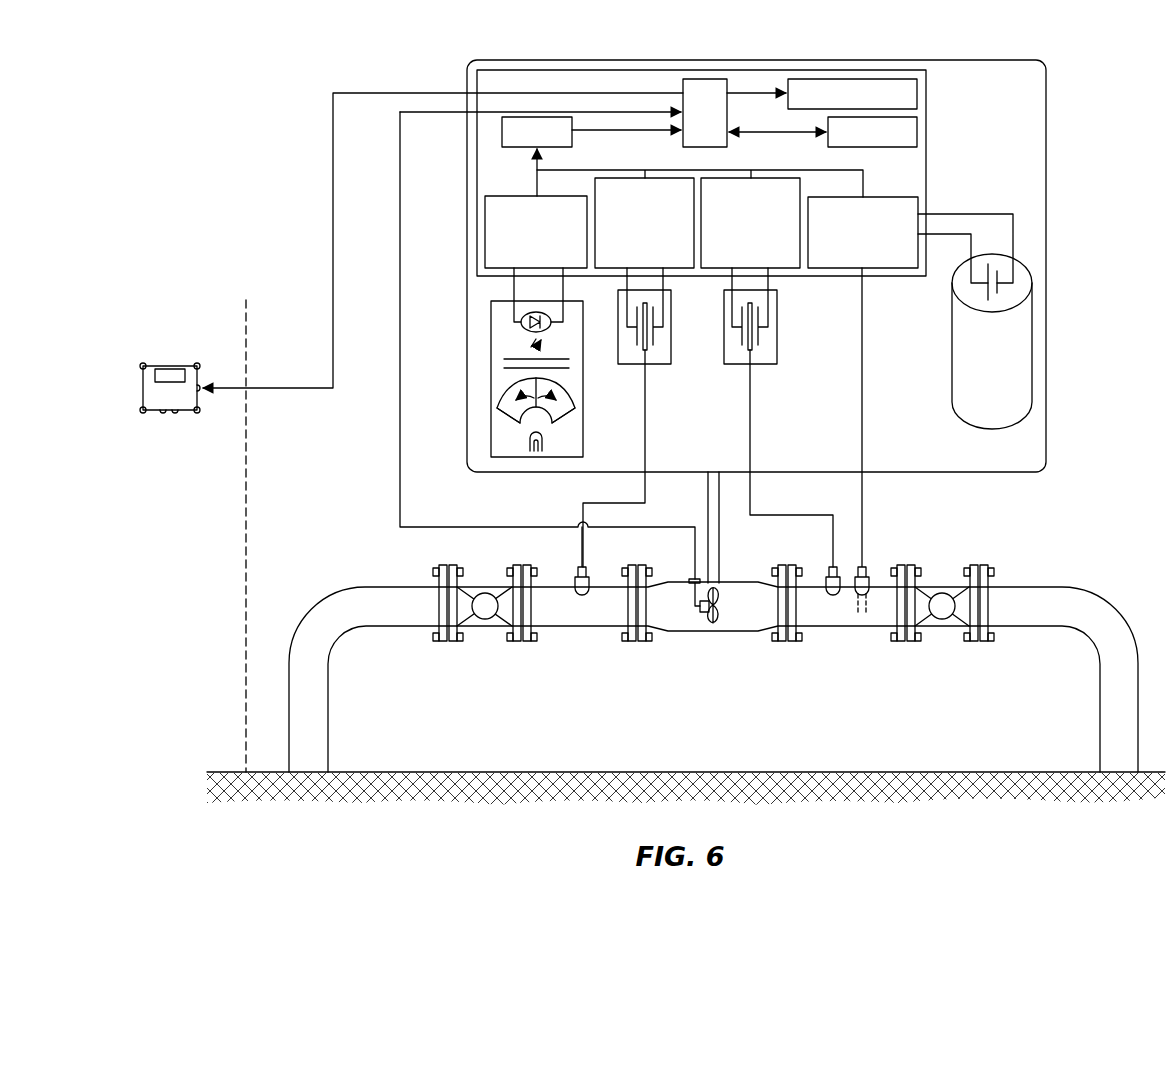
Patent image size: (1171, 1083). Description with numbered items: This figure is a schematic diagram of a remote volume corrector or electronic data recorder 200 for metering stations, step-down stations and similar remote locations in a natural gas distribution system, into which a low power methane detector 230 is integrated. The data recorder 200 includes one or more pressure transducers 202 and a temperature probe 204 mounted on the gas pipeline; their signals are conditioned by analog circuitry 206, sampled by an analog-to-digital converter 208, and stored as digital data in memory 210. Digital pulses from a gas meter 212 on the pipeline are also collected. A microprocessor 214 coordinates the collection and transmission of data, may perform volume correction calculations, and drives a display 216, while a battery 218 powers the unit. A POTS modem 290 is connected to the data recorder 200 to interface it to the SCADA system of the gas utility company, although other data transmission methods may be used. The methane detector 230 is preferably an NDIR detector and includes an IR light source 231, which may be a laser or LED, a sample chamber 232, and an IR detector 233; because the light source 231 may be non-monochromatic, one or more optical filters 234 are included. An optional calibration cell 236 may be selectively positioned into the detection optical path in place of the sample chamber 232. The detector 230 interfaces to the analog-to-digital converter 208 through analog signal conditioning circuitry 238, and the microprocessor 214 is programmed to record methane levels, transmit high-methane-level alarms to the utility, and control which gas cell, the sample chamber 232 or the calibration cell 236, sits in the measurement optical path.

The volume corrector or electronic data recorder 200 is at (1046, 195).
The pressure transducers 202 is at (655, 365).
The temperature probe 204 is at (860, 616).
The analog circuitry 206 is at (818, 268).
The analog-to-digital converter 208 is at (502, 132).
The memory 210 is at (917, 132).
The gas meter 212 is at (708, 615).
The microprocessor 214 is at (703, 79).
The display 216 is at (852, 79).
The battery 218 is at (1032, 340).
The methane detector 230 is at (491, 397).
The IR light source 231 is at (530, 445).
The sample chamber 232 is at (506, 425).
The IR detector 233 is at (519, 329).
The optical filters 234 is at (504, 358).
The calibration cell 236 is at (566, 425).
The analog signal conditioning circuitry 238 is at (485, 235).
The POTS modem 290 is at (170, 366).